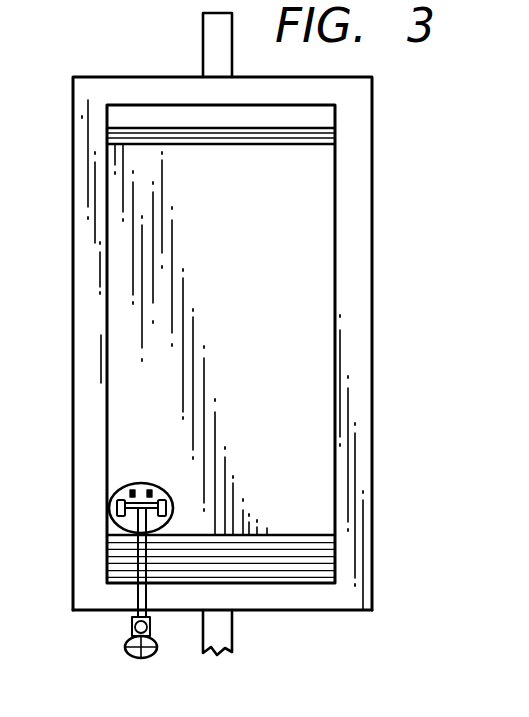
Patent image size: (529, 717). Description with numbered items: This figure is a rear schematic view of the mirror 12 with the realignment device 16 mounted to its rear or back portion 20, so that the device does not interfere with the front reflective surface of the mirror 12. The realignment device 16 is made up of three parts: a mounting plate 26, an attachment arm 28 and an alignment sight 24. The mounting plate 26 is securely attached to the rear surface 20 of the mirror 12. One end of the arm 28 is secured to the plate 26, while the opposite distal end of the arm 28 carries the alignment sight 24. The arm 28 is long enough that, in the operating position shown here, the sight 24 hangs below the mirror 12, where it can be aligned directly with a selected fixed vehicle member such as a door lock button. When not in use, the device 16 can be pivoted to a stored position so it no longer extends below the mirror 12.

The mirror 12 is at (381, 221).
The rear portion of the mirror 20 is at (303, 342).
The mounting plate 26 is at (156, 485).
The attachment arm 28 is at (136, 557).
The realignment device 16 is at (128, 591).
The alignment sight 24 is at (130, 656).